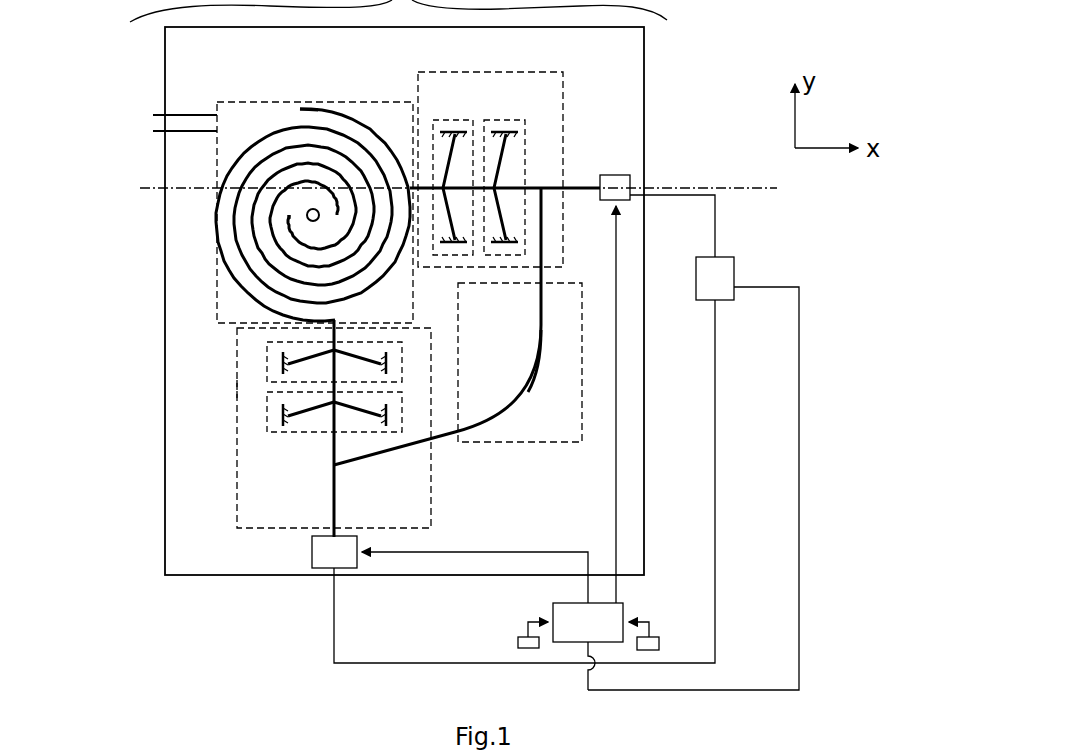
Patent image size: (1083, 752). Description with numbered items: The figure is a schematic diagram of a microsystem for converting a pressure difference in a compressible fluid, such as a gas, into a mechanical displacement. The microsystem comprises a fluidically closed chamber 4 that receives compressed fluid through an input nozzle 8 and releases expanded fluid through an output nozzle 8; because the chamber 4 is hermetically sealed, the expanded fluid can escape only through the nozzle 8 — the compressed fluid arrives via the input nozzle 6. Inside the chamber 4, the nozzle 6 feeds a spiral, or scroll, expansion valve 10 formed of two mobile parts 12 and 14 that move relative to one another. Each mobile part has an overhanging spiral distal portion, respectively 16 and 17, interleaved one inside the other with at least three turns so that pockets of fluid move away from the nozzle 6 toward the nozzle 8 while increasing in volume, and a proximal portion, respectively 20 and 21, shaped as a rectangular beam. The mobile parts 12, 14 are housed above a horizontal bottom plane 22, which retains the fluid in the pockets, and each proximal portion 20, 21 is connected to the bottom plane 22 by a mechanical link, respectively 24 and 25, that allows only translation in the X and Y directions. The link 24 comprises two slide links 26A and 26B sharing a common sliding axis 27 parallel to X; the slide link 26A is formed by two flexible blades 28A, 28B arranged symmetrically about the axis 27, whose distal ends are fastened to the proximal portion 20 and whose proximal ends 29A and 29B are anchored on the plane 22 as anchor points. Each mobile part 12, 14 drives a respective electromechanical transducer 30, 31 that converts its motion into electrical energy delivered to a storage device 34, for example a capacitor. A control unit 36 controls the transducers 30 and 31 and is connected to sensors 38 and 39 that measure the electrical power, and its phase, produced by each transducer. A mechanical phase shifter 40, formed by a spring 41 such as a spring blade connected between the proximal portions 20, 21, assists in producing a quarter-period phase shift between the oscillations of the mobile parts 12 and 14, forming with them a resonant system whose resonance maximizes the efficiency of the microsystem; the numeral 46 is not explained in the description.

The fluidically closed chamber 4 is at (652, 37).
The input nozzle 6 is at (308, 218).
The output nozzle 8 is at (182, 115).
The spiral expansion valve 10 is at (278, 97).
The mobile part 12 is at (315, 106).
The mobile part 14 is at (250, 138).
The overhanging distal portion 16 is at (374, 130).
The overhanging distal portion 17 is at (222, 205).
The proximal portion 20 is at (416, 225).
The proximal portion 21 is at (332, 328).
The bottom plane 22 is at (178, 369).
The mechanical link 24 is at (393, 275).
The mechanical link 25 is at (230, 392).
The slide link 26A is at (452, 116).
The slide link 26B is at (522, 110).
The sliding axis 27 is at (770, 190).
The flexible blade 28A is at (508, 165).
The flexible blade 28B is at (502, 208).
The proximal end 29A is at (499, 126).
The proximal end 29B is at (503, 248).
The electromechanical transducer 30 is at (620, 183).
The electromechanical transducer 31 is at (325, 557).
The electrical energy storage device 34 is at (566, 442).
The control unit 36 is at (492, 448).
The sensor 38 is at (657, 637).
The sensor 39 is at (521, 642).
The mechanical phase shifter 40 is at (499, 452).
The spring 41 is at (530, 384).
The antenna device 46 is at (698, 739).